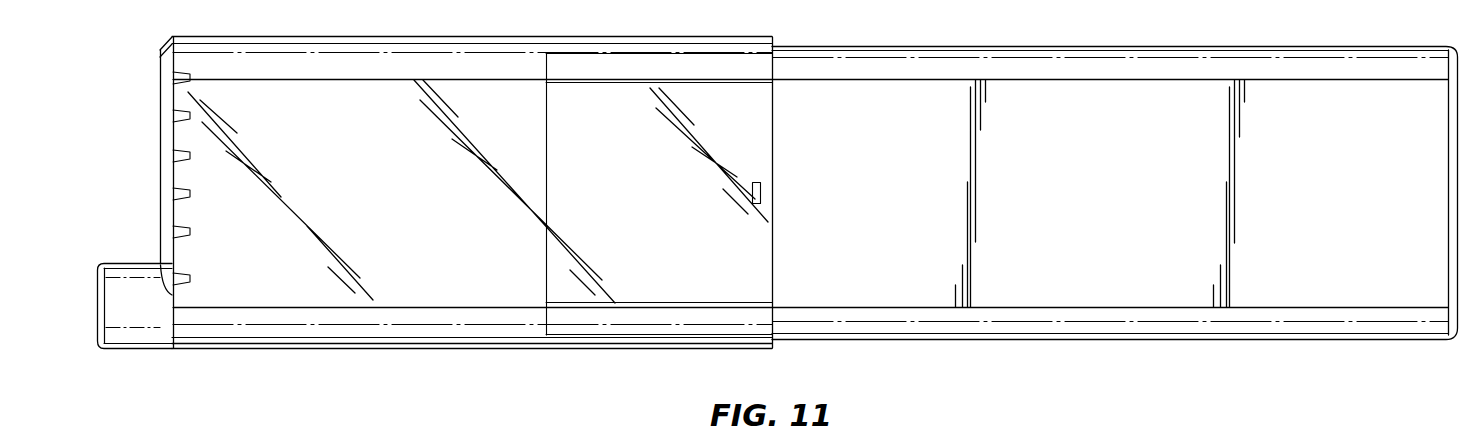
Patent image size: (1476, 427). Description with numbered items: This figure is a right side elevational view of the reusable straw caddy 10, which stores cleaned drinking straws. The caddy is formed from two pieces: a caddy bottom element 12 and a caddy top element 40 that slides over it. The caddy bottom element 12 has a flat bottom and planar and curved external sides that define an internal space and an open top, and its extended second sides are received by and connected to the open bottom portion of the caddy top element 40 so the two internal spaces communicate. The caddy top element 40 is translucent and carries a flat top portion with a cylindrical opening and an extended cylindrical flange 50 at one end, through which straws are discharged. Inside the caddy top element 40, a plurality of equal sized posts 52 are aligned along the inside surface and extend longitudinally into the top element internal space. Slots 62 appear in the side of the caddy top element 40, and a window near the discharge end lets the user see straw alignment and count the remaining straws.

The reusable straw caddy 10 is at (776, 213).
The caddy bottom element 12 is at (1134, 271).
The caddy top element 40 is at (447, 284).
The extended cylindrical flange 50 is at (133, 337).
The equal sized posts 52 is at (194, 152).
The slots 62 is at (305, 224).